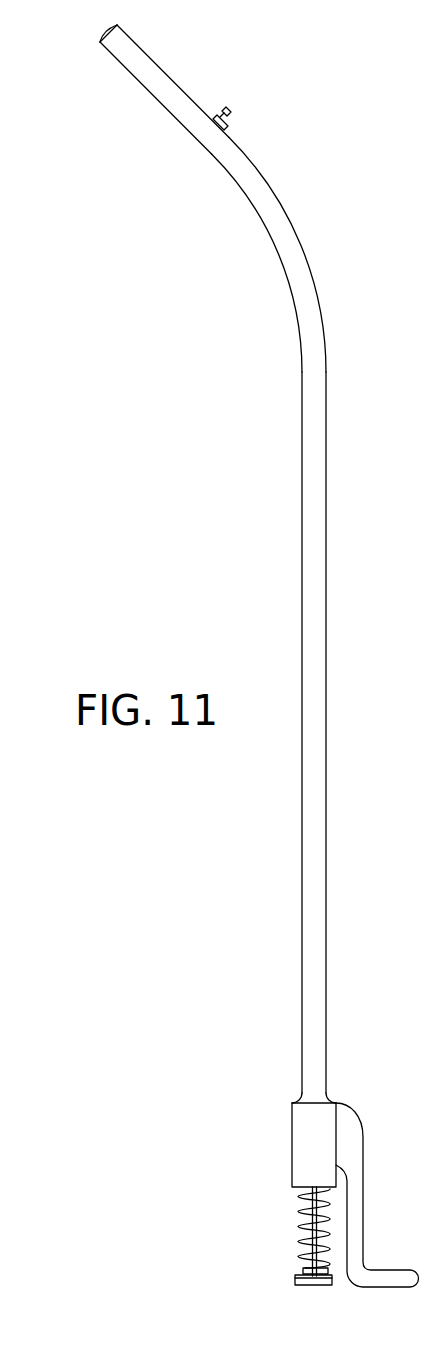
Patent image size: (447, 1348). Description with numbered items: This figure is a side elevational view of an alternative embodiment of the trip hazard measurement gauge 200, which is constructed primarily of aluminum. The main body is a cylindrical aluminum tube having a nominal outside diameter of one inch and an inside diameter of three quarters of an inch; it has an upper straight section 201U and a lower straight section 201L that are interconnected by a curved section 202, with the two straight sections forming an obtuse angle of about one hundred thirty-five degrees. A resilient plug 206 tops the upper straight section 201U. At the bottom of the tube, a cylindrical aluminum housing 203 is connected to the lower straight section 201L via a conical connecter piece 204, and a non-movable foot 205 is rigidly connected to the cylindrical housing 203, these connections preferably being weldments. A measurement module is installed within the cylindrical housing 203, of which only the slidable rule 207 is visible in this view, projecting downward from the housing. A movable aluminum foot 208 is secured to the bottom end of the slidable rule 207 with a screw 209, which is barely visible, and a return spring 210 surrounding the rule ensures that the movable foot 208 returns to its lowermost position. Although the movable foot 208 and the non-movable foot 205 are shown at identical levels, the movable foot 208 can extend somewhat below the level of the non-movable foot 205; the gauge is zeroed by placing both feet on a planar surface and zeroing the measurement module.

The trip hazard measurement gauge 200 is at (288, 72).
The upper straight section 201U is at (145, 65).
The lower straight section 201L is at (313, 706).
The curved section 202 is at (297, 278).
The cylindrical aluminum housing 203 is at (307, 1145).
The conical connecter piece 204 is at (302, 1098).
The non-movable foot 205 is at (355, 1213).
The resilient plug 206 is at (104, 34).
The slidable rule 207 is at (310, 1215).
The movable aluminum foot 208 is at (300, 1281).
The screw 209 is at (295, 1267).
The return spring 210 is at (306, 1245).